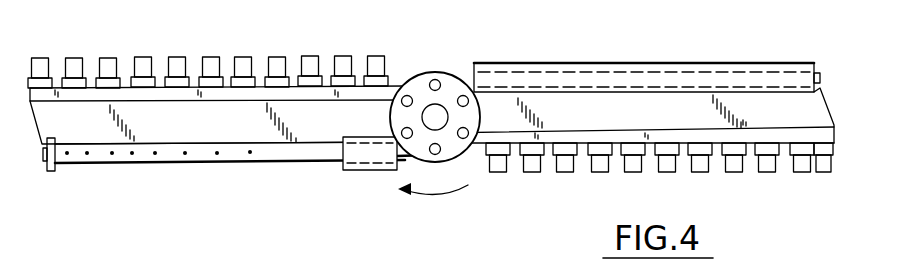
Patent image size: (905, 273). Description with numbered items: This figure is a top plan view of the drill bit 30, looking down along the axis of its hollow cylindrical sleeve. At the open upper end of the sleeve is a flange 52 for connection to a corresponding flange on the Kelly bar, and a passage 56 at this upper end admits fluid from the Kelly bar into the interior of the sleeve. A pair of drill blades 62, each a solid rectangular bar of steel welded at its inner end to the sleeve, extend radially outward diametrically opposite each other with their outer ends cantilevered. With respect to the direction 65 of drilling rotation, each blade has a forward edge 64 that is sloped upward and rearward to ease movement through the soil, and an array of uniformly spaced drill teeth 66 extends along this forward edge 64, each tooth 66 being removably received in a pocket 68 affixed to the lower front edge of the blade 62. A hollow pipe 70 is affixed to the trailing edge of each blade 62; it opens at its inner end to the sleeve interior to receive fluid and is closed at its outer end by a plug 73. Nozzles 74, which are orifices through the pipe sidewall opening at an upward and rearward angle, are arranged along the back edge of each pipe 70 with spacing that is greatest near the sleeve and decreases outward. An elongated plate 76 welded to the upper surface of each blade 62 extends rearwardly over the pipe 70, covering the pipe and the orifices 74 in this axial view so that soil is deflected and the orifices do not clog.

The drill bit 30 is at (587, 34).
The flange 52 is at (418, 78).
The passage 56 is at (437, 107).
The drill blade 62 is at (180, 132).
The forward edge 64 is at (223, 92).
The direction of drilling rotation 65 is at (443, 194).
The drill tooth 66 is at (103, 62).
The pocket 68 is at (166, 78).
The hollow pipe 70 is at (312, 159).
The plug 73 is at (819, 78).
The nozzle 74 is at (87, 153).
The elongated plate 76 is at (52, 173).